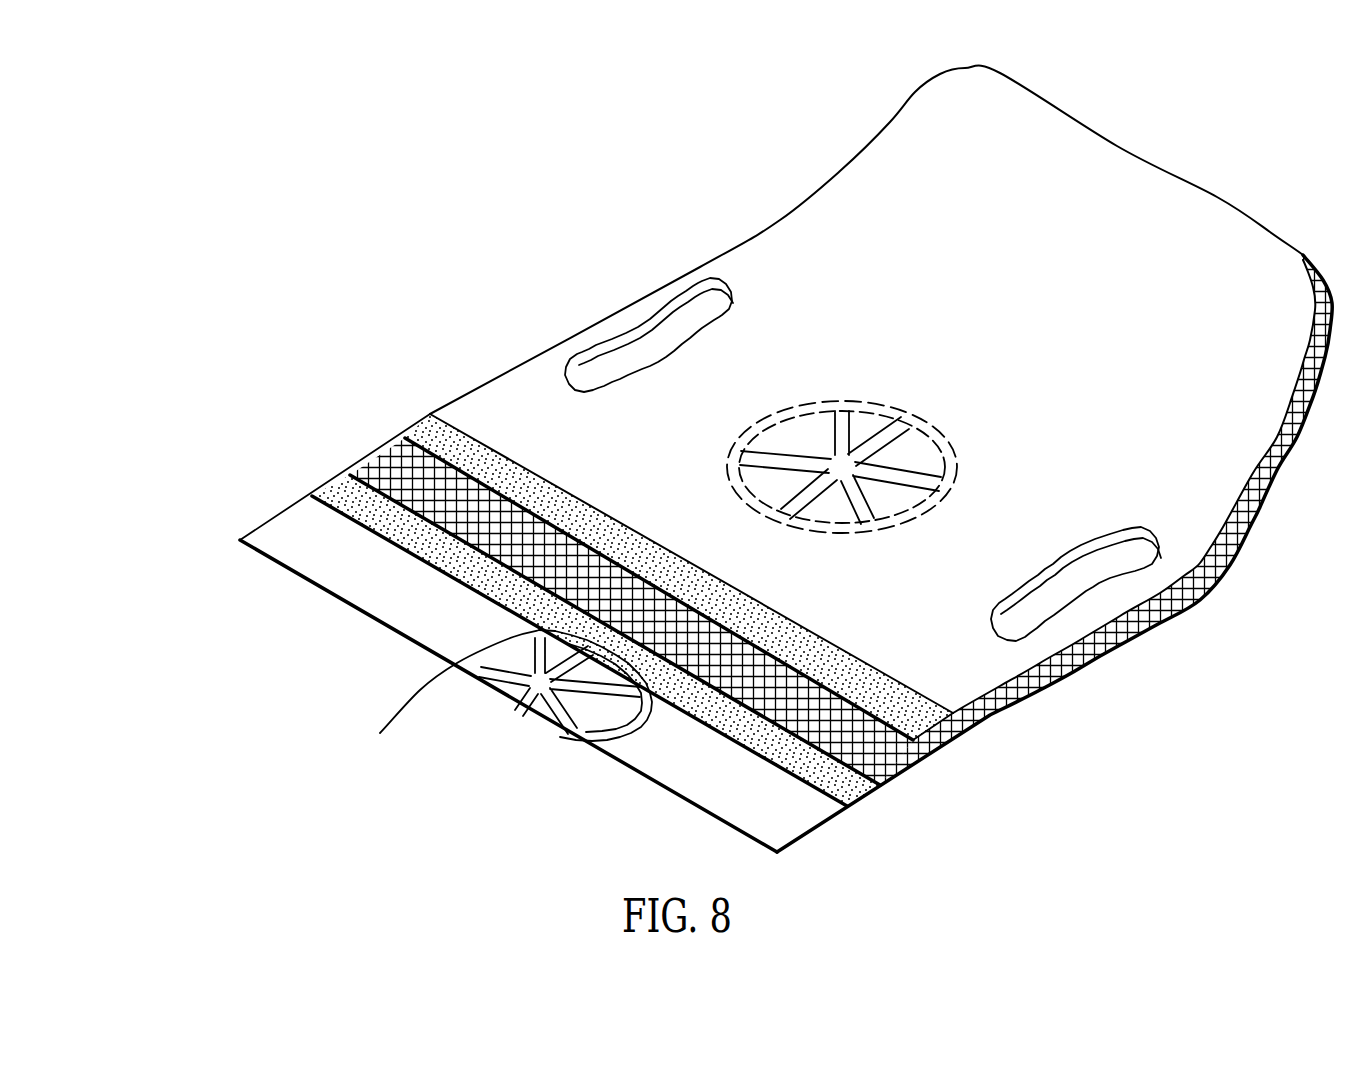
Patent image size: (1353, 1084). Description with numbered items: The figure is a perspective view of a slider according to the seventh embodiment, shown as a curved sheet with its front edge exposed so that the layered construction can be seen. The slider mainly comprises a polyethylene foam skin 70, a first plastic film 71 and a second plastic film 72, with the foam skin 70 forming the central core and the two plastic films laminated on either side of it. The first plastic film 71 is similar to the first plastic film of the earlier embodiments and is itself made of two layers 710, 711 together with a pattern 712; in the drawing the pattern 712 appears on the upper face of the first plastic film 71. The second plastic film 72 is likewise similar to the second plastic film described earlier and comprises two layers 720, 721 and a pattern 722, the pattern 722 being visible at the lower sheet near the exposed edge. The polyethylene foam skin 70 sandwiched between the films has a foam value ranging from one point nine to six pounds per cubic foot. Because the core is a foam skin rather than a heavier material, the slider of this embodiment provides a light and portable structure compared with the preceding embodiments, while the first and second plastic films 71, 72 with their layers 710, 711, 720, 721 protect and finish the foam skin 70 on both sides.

The polyethylene foam skin 70 is at (397, 468).
The first plastic film 71 is at (801, 459).
The layer 710 is at (430, 440).
The layer 711 is at (540, 395).
The pattern 712 is at (850, 405).
The second plastic film 72 is at (472, 627).
The layer 720 is at (348, 497).
The layer 721 is at (280, 553).
The pattern 722 is at (467, 673).